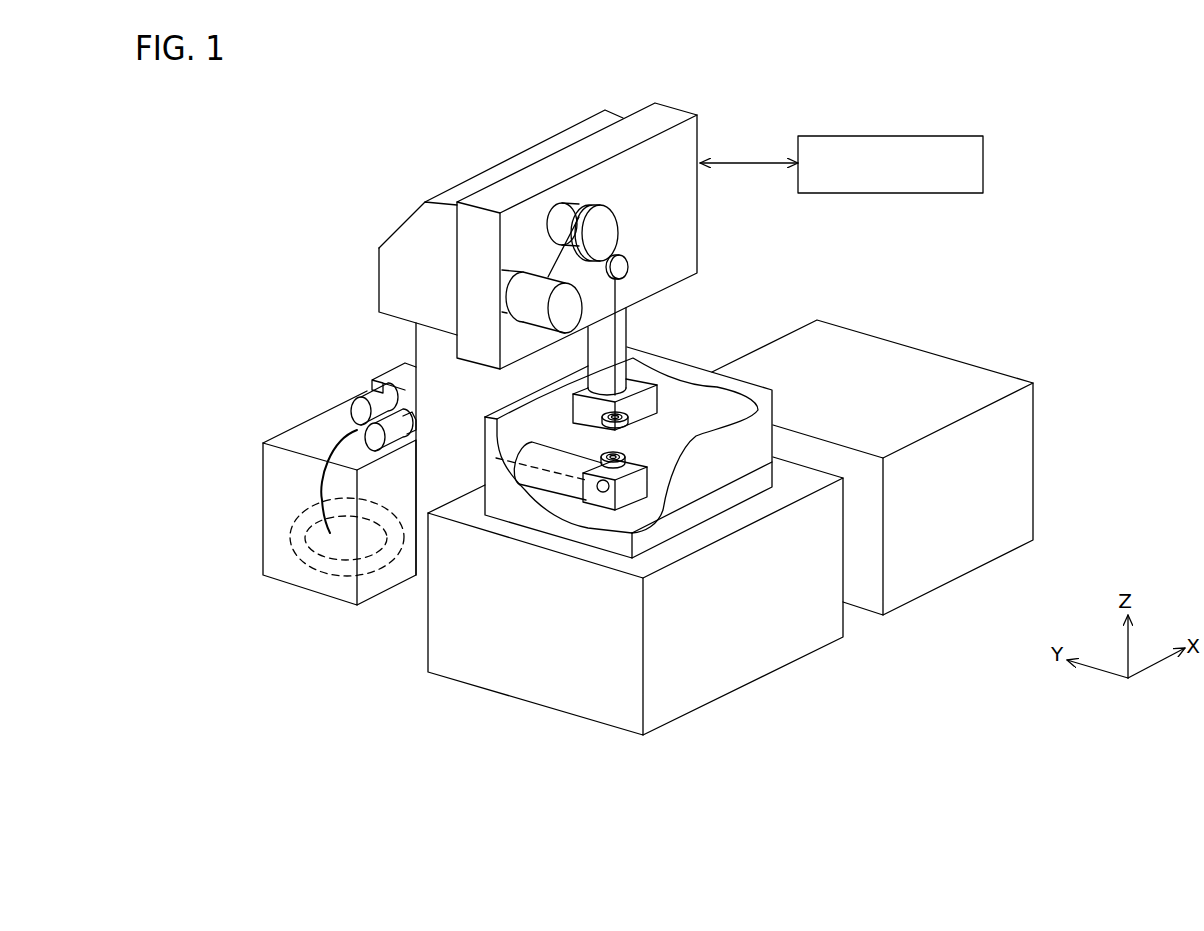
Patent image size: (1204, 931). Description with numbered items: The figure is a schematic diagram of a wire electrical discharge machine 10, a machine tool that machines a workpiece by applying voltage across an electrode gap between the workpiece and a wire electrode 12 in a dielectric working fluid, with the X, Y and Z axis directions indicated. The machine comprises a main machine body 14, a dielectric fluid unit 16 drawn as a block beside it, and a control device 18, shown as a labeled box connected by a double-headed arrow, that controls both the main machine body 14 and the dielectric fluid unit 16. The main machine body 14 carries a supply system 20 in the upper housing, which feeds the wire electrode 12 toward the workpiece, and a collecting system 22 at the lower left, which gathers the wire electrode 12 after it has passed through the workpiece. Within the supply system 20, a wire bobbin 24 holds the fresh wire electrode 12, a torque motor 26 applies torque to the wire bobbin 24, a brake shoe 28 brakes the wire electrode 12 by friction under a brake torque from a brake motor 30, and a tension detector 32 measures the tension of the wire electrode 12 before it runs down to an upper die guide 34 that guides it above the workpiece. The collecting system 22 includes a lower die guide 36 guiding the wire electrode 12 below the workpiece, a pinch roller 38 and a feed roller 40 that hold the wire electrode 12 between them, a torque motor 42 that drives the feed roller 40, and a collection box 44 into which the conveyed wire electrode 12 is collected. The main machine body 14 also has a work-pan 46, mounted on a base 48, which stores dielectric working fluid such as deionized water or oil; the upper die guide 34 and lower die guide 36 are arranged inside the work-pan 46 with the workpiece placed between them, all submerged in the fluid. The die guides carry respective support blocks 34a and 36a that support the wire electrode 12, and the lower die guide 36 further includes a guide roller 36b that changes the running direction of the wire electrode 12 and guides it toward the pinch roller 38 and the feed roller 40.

The wire electrical discharge machine 10 is at (235, 168).
The wire electrode 12 is at (618, 292).
The main machine body 14 is at (375, 230).
The dielectric fluid unit 16 is at (1018, 448).
The control device 18 is at (919, 135).
The supply system 20 is at (646, 212).
The collecting system 22 is at (306, 401).
The wire bobbin 24 is at (532, 283).
The torque motor 26 is at (503, 294).
The brake shoe 28 is at (604, 222).
The brake motor 30 is at (560, 214).
The tension detector 32 is at (629, 268).
The upper die guide 34 is at (634, 386).
The support block 34a is at (630, 415).
The lower die guide 36 is at (636, 486).
The support block 36a is at (622, 457).
The guide roller 36b is at (598, 490).
The pinch roller 38 is at (378, 378).
The feed roller 40 is at (391, 442).
The torque motor 42 is at (408, 415).
The collection box 44 is at (275, 487).
The work-pan 46 is at (742, 384).
The base 48 is at (772, 653).